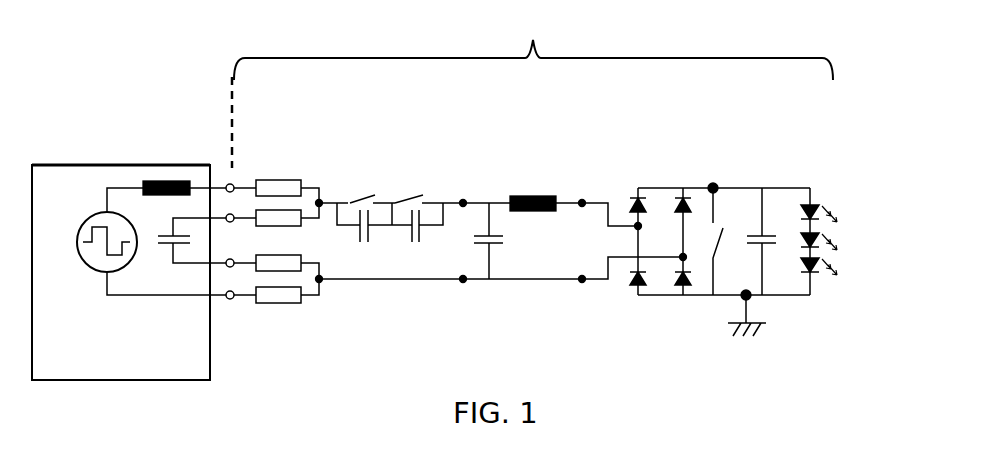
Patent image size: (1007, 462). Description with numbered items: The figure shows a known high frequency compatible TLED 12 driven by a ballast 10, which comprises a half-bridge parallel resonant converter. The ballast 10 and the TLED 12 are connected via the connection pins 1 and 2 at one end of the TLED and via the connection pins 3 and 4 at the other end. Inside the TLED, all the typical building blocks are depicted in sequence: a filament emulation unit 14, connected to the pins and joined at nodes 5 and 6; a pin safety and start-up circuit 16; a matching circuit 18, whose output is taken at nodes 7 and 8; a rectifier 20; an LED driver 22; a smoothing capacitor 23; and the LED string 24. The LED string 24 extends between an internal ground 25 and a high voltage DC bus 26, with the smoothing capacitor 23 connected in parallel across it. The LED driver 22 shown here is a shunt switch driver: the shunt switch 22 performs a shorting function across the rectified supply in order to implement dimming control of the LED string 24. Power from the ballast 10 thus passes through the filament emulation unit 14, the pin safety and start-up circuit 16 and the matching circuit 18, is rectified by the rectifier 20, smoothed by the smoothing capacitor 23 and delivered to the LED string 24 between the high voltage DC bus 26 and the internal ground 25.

The connection pin 1 is at (228, 185).
The connection pin 2 is at (228, 215).
The connection pin 3 is at (231, 268).
The connection pin 4 is at (230, 299).
The first common node 5 is at (319, 203).
The second common node 6 is at (320, 281).
The first output node of matching network 7 is at (583, 200).
The second output node of matching network 8 is at (582, 282).
The ballast 10 is at (105, 165).
The TLED 12 is at (532, 90).
The filament emulation unit 14 is at (262, 160).
The pin safety and start-up circuit 16 is at (378, 172).
The matching circuit 18 is at (520, 177).
The rectifier 20 is at (648, 167).
The LED driver 22 is at (718, 168).
The smoothing capacitor 23 is at (764, 170).
The LED string 24 is at (818, 178).
The internal ground 25 is at (750, 297).
The high voltage DC bus 26 is at (708, 184).